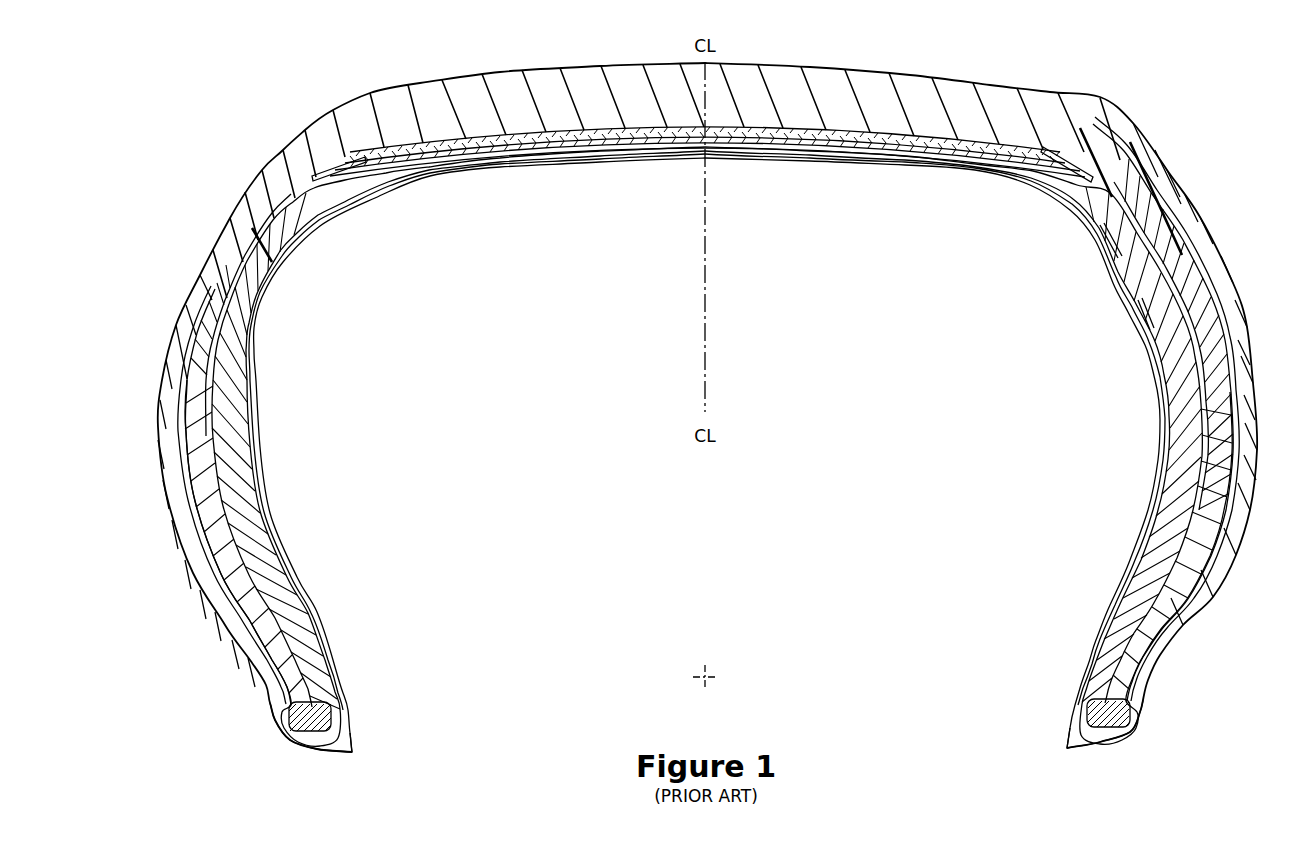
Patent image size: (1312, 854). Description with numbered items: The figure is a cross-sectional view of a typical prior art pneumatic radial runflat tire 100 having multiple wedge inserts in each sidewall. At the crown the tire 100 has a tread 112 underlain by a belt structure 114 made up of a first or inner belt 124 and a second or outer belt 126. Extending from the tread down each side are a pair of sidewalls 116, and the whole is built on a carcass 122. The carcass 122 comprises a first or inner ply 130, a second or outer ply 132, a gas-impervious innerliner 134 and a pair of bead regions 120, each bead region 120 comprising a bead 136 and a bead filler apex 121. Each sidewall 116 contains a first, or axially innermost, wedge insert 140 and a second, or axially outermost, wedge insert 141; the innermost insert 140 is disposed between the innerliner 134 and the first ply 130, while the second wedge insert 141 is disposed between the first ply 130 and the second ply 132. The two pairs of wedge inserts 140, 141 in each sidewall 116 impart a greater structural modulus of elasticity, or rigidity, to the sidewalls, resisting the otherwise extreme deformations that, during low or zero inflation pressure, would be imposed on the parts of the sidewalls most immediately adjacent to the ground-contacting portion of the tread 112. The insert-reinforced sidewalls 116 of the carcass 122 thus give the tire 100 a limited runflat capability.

The pneumatic radial runflat tire 100 is at (318, 92).
The tread 112 is at (656, 68).
The belt structure 114 is at (763, 127).
The sidewall 116 is at (165, 345).
The bead region 120 is at (352, 715).
The bead filler apex 121 is at (278, 642).
The carcass 122 is at (540, 160).
The first or inner belt 124 is at (1090, 160).
The second or outer belt 126 is at (1063, 150).
The first or inner ply 130 is at (1120, 250).
The second or outer ply 132 is at (1143, 307).
The innerliner 134 is at (327, 227).
The bead 136 is at (303, 727).
The first or axially innermost wedge insert 140 is at (245, 470).
The second or axially outermost wedge insert 141 is at (200, 443).